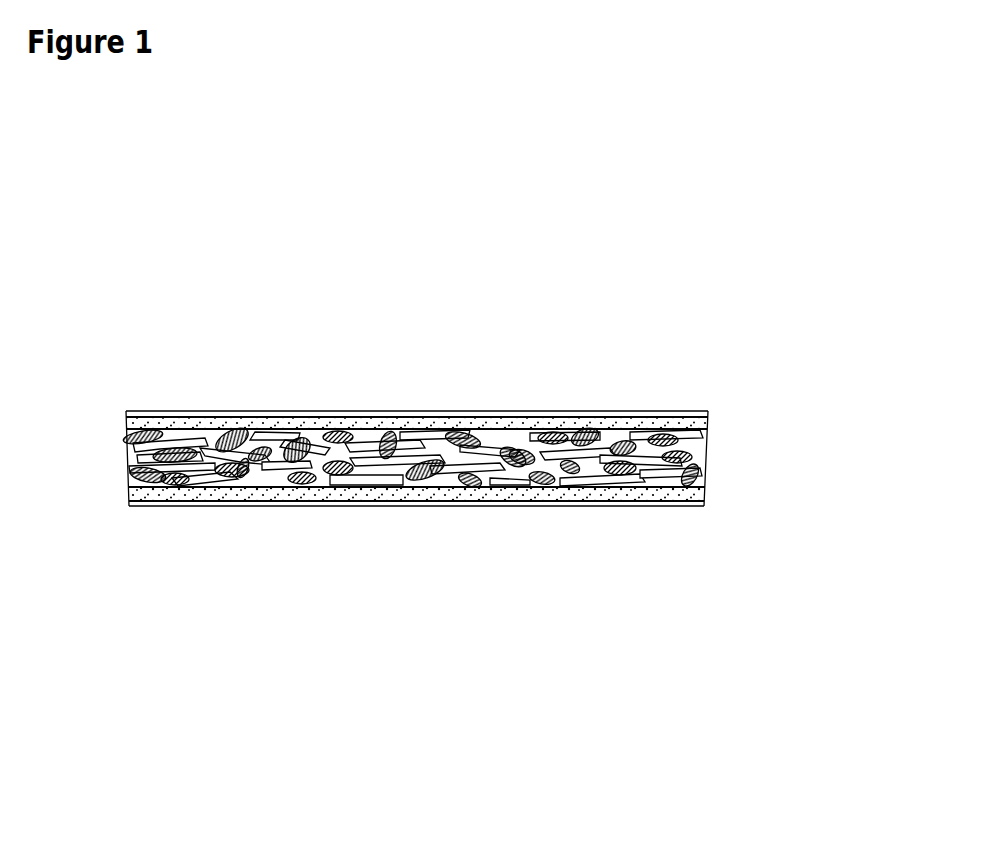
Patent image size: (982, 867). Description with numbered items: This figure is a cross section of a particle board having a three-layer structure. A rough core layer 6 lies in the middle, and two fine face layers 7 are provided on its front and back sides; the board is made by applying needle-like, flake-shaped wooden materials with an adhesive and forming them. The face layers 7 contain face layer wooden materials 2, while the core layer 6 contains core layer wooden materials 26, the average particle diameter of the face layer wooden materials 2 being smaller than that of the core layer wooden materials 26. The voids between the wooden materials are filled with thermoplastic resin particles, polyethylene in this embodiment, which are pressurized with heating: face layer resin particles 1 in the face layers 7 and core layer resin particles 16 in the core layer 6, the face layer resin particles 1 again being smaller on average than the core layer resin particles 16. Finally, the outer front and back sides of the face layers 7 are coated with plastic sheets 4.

The face layer resin particle 1 is at (620, 618).
The face layer wooden material 2 is at (430, 416).
The plastic sheet 4 is at (150, 570).
The core layer 6 is at (708, 477).
The face layer 7 is at (688, 542).
The core layer resin particle 16 is at (240, 470).
The core layer wooden material 26 is at (535, 443).